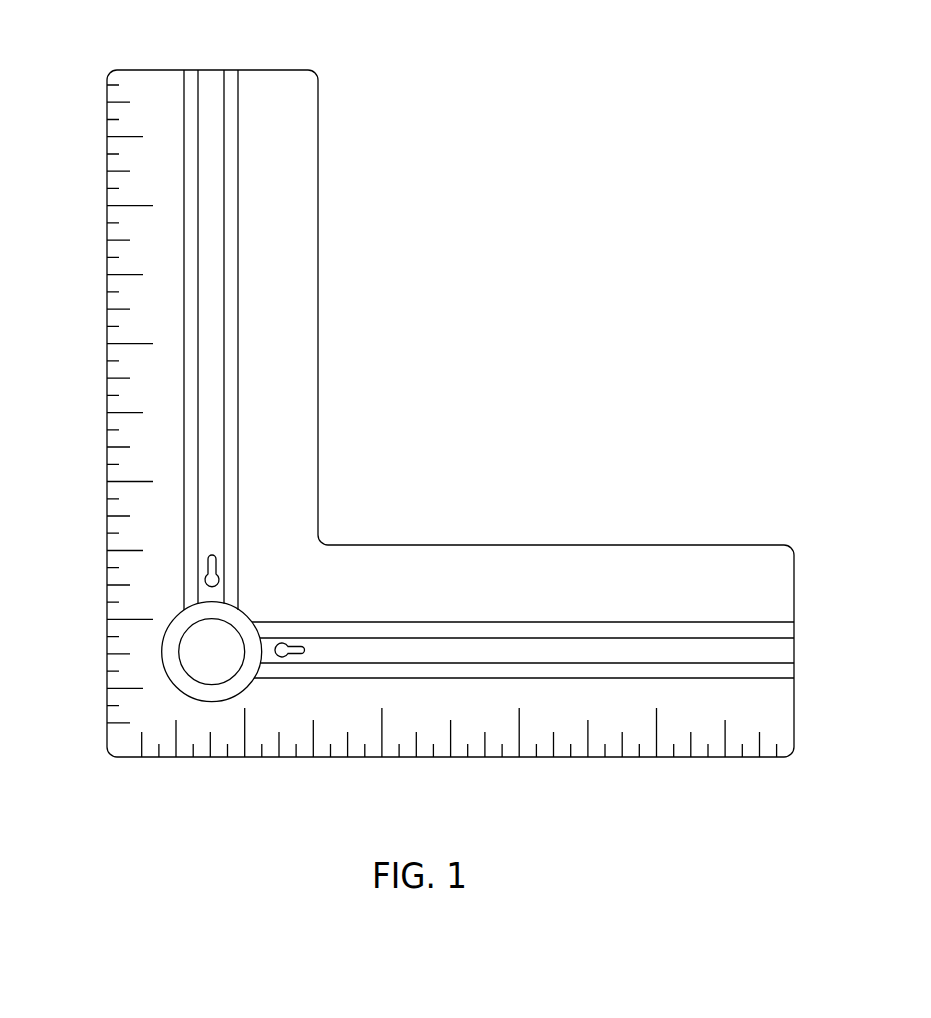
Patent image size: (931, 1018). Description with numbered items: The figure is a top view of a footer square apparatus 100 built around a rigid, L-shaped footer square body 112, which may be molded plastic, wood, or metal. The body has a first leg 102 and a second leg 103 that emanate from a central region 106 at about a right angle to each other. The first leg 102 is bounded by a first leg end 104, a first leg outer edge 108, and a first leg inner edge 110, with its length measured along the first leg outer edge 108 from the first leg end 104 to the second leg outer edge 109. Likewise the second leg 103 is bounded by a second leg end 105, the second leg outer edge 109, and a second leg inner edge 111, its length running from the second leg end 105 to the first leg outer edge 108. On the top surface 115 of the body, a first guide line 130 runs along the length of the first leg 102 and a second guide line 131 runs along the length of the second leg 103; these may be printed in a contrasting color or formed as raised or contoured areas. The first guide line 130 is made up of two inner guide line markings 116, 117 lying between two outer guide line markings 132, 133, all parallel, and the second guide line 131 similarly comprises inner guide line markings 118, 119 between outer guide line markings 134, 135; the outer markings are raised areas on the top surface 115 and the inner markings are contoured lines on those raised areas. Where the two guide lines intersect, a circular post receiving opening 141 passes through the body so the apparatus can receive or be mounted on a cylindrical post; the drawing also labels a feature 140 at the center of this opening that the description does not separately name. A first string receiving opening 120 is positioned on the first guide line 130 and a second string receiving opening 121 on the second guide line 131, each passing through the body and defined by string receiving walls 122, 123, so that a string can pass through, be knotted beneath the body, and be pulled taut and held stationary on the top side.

The footer square apparatus 100 is at (616, 217).
The first leg 102 is at (349, 136).
The second leg 103 is at (706, 510).
The first leg end 104 is at (273, 70).
The second leg end 105 is at (795, 613).
The central region 106 is at (91, 781).
The first leg outer edge 108 is at (107, 300).
The second leg outer edge 109 is at (560, 757).
The first leg inner edge 110 is at (318, 308).
The second leg inner edge 111 is at (485, 545).
The footer square body 112 is at (364, 510).
The top surface 115 is at (395, 720).
The inner guide line marking 116 is at (198, 193).
The inner guide line marking 117 is at (225, 166).
The inner guide line marking 118 is at (457, 638).
The inner guide line marking 119 is at (488, 663).
The first string receiving opening 120 is at (218, 567).
The second string receiving opening 121 is at (303, 645).
The string receiving wall 122 is at (208, 565).
The string receiving wall 123 is at (302, 656).
The first guide line 130 is at (266, 228).
The second guide line 131 is at (658, 600).
The outer guide line marking 132 is at (184, 403).
The outer guide line marking 133 is at (238, 403).
The outer guide line marking 134 is at (550, 622).
The outer guide line marking 135 is at (603, 679).
The central aperture 140 is at (222, 668).
The post receiving opening 141 is at (178, 648).